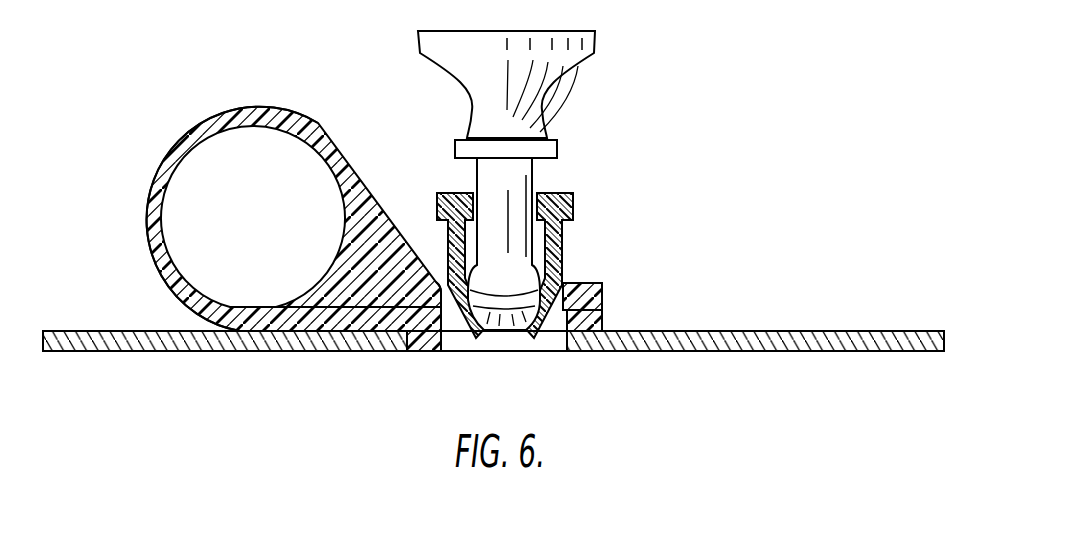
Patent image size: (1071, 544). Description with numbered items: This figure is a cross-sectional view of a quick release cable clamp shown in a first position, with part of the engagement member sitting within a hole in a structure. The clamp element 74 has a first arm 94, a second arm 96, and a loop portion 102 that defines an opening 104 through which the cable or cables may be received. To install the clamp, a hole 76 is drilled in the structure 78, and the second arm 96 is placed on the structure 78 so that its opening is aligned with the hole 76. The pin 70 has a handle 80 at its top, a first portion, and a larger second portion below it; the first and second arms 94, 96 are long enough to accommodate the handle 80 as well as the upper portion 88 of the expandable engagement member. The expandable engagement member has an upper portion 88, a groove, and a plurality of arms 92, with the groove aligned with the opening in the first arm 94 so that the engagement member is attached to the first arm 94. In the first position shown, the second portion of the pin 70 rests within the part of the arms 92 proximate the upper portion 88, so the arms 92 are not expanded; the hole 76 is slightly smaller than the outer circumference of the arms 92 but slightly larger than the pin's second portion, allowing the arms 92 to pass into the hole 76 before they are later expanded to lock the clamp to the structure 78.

The pin 70 is at (733, 27).
The clamp element 74 is at (232, 273).
The hole 76 is at (517, 343).
The structure 78 is at (853, 353).
The handle 80 is at (535, 153).
The upper portion 88 is at (577, 210).
The arms 92 is at (605, 326).
The first arm 94 is at (441, 284).
The second arm 96 is at (400, 322).
The loop portion 102 is at (250, 101).
The opening 104 is at (240, 217).